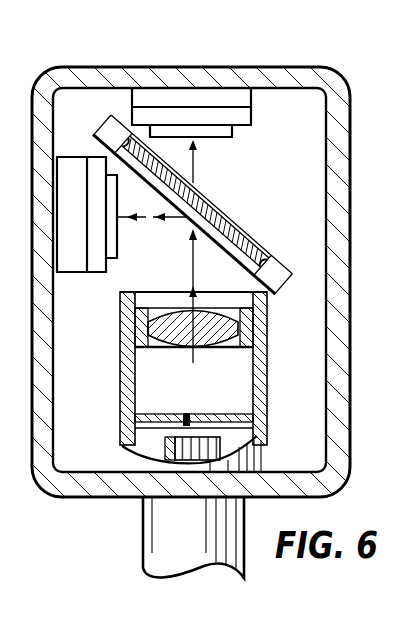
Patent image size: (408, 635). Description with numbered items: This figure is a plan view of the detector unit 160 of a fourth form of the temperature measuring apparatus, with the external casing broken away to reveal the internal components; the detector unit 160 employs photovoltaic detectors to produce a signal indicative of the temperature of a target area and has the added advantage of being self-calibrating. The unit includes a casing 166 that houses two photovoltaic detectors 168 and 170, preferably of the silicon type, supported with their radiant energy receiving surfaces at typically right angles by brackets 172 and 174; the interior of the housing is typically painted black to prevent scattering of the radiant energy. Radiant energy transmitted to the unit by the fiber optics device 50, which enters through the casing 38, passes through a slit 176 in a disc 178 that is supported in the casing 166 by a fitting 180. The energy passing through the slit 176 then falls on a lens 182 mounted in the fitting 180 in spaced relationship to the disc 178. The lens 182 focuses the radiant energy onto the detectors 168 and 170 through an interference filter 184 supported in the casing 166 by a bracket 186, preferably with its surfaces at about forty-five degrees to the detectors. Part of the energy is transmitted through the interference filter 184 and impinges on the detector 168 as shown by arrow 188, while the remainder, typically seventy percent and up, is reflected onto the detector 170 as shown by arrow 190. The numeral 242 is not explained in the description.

The detector unit 160 is at (83, 64).
The casing 166 is at (356, 198).
The lead 242 is at (407, 58).
The bracket 172 is at (208, 98).
The photovoltaic detector 168 is at (218, 137).
The arrow 188 is at (194, 171).
The interference filter 184 is at (236, 221).
The bracket 186 is at (292, 283).
The arrow 190 is at (176, 219).
The bracket 174 is at (72, 268).
The photovoltaic detector 170 is at (117, 251).
The fitting 180 is at (262, 360).
The lens 182 is at (254, 328).
The disc 178 is at (237, 415).
The slit 176 is at (195, 420).
The fiber optics device 50 is at (165, 447).
The casing 38 is at (143, 533).